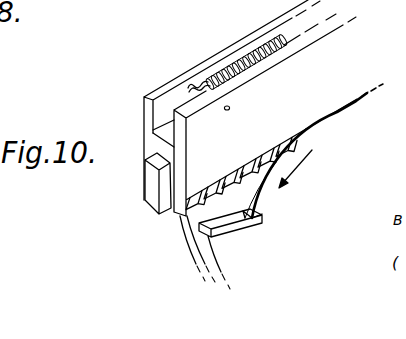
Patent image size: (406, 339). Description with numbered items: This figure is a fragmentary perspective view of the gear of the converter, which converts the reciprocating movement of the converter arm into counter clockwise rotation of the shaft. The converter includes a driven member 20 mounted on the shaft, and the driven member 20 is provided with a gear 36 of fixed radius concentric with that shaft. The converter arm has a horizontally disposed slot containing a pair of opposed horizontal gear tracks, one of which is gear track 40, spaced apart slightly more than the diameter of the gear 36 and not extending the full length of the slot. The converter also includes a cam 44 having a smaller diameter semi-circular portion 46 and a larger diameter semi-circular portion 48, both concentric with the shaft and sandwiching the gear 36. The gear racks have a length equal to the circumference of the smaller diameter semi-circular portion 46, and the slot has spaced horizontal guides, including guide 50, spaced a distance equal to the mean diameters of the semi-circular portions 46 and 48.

The driven member 20 is at (209, 271).
The gear 36 is at (232, 230).
The gear track 40 is at (147, 212).
The cam 44 is at (260, 196).
The smaller diameter semi-circular portion 46 is at (277, 150).
The larger diameter semi-circular portion 48 is at (186, 243).
The horizontal guide 50 is at (240, 47).